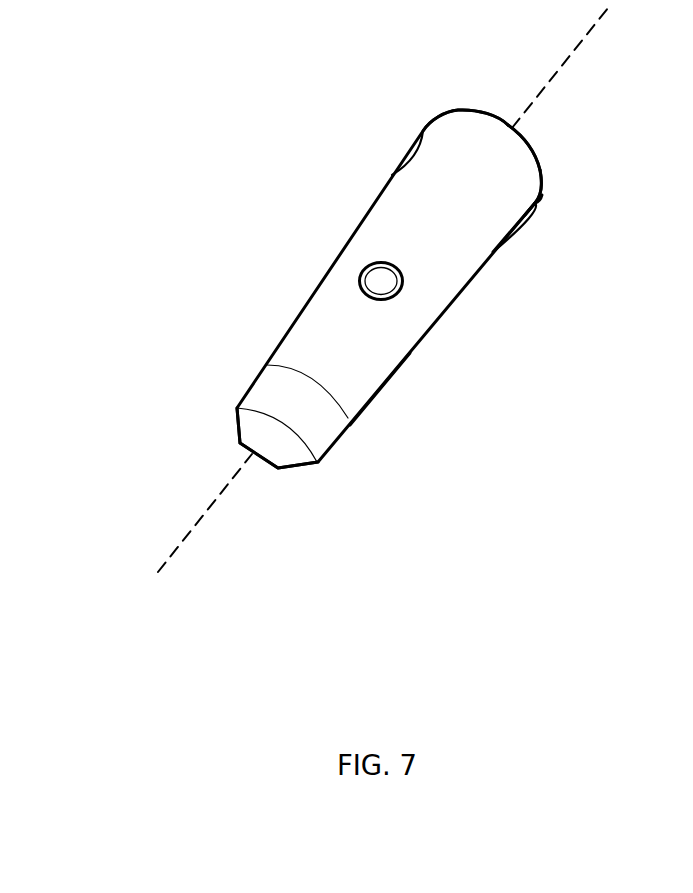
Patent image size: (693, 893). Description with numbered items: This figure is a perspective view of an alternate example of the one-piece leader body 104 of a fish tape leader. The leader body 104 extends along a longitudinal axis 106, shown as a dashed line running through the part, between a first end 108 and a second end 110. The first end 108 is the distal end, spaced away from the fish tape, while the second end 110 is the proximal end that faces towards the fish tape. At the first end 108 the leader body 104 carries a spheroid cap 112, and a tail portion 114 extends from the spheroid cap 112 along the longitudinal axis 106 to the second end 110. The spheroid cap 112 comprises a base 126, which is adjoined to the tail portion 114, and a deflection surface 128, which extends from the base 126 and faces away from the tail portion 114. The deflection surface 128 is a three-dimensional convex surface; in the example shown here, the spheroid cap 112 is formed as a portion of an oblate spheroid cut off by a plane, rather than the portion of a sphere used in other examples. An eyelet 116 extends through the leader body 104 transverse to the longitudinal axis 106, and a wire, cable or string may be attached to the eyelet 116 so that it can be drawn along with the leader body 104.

The leader body 104 is at (477, 303).
The longitudinal axis 106 is at (585, 35).
The first end 108 is at (507, 123).
The second end 110 is at (258, 468).
The spheroid cap 112 is at (523, 139).
The tail portion 114 is at (368, 378).
The eyelet 116 is at (513, 232).
The base 126 is at (537, 203).
The deflection surface 128 is at (520, 170).